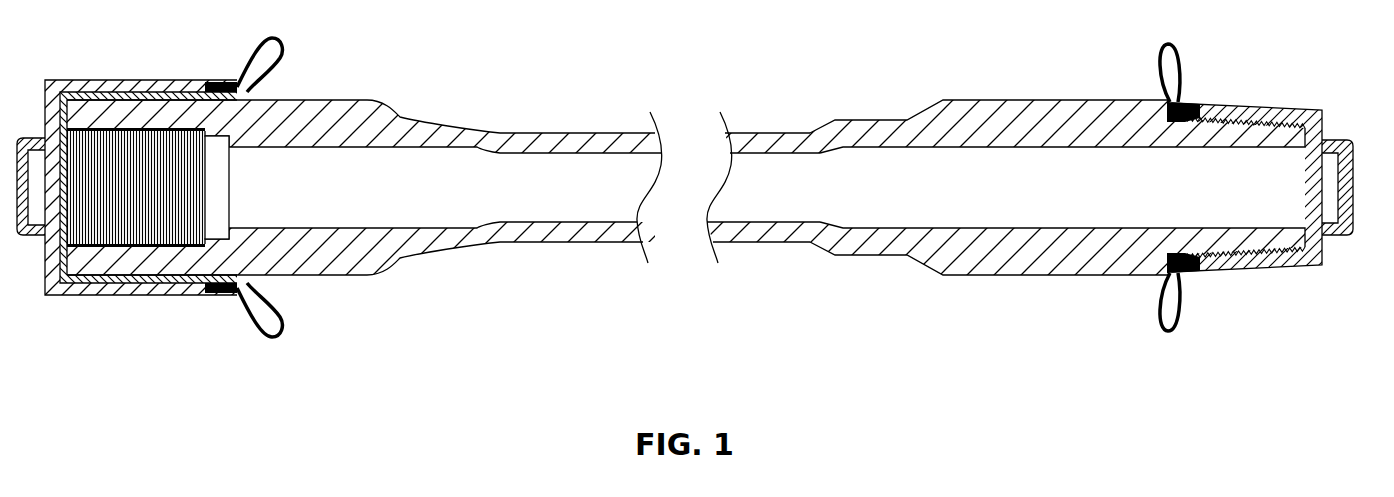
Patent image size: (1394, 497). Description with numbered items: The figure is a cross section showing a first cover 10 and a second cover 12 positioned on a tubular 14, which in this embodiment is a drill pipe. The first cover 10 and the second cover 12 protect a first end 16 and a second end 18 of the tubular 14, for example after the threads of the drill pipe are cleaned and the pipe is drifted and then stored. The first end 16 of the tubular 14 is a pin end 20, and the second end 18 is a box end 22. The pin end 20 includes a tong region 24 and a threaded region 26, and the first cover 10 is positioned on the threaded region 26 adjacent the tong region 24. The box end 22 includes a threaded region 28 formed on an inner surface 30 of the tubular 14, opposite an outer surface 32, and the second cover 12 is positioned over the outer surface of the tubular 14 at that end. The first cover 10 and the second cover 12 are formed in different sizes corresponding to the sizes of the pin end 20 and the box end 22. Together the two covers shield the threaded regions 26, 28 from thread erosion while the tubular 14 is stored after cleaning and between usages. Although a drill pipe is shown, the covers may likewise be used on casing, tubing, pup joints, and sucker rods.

The first cover 10 is at (1288, 107).
The second cover 12 is at (95, 80).
The tubular 14 is at (582, 132).
The first end 16 is at (1307, 237).
The second end 18 is at (63, 233).
The pin end 20 is at (1298, 138).
The box end 22 is at (63, 143).
The tong region 24 is at (1075, 100).
The threaded region 26 is at (1280, 257).
The threaded region 28 is at (200, 130).
The inner surface 30 is at (190, 246).
The outer surface 32 is at (125, 277).